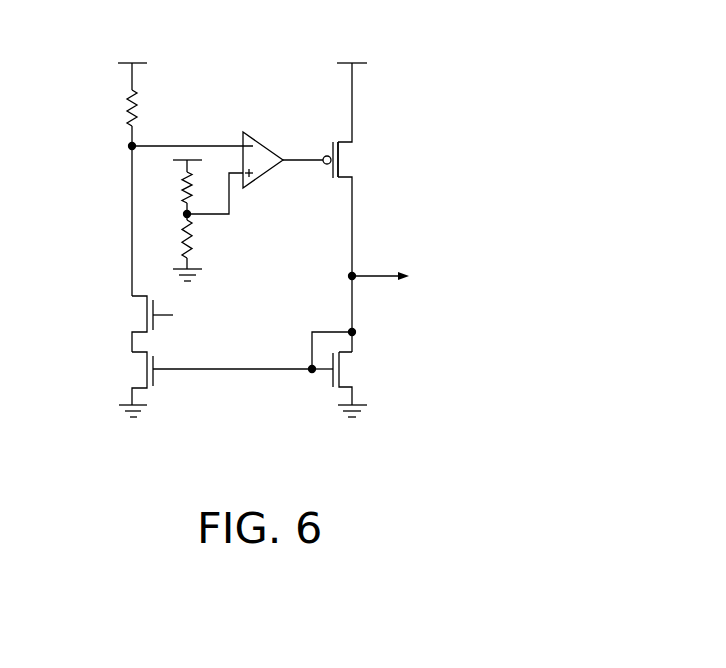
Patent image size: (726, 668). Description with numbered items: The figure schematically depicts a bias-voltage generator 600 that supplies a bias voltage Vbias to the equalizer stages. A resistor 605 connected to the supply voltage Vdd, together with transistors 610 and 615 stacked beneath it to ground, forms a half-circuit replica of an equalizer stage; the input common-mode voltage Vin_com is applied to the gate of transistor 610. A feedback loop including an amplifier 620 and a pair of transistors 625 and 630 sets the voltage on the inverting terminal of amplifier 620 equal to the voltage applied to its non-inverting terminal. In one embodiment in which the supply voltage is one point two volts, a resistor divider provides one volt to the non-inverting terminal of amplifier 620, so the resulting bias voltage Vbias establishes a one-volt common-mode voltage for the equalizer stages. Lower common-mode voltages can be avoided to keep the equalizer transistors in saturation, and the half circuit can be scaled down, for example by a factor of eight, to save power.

The bias-voltage generator 600 is at (442, 46).
The resistor 605 is at (136, 106).
The transistor 610 is at (147, 328).
The transistor 615 is at (147, 385).
The amplifier 620 is at (256, 141).
The transistor 625 is at (343, 176).
The transistor 630 is at (346, 385).